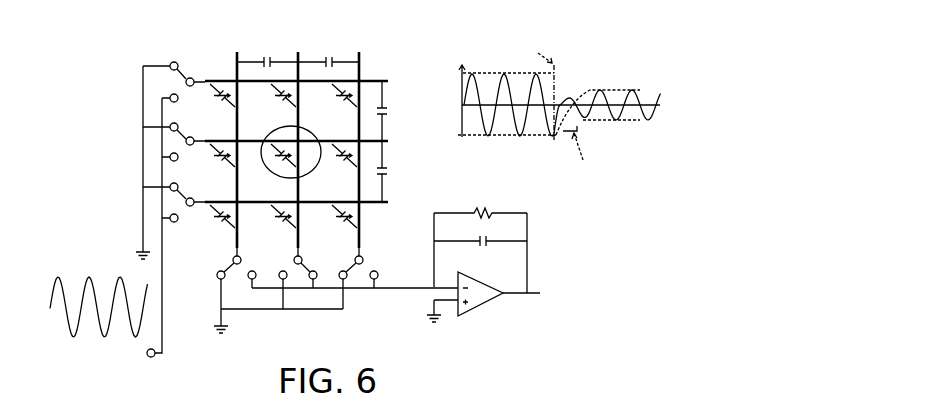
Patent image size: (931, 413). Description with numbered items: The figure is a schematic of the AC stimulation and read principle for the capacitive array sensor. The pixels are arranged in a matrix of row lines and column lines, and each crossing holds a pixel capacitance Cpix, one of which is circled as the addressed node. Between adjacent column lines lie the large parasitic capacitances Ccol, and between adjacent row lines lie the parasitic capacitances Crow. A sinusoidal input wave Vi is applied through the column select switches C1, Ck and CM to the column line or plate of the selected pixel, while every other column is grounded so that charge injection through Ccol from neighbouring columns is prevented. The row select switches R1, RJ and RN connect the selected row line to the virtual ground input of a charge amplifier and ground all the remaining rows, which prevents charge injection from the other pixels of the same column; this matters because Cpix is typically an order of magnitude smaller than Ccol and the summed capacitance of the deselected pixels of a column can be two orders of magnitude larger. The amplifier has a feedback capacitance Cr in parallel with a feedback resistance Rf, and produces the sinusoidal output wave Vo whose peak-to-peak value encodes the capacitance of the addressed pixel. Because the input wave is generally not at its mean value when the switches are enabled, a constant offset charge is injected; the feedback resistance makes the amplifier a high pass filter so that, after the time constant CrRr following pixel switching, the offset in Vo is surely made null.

The row select switch R1 is at (174, 75).
The row select switch RJ is at (174, 141).
The row select switch RN is at (174, 200).
The parasitic capacitance of neighboring columns Ccol is at (298, 50).
The parasitic capacitance of neighboring rows Crow is at (395, 141).
The pixel capacitance Cpix is at (298, 178).
The column select switch C1 is at (239, 278).
The column select switch Ck is at (302, 278).
The column select switch CM is at (364, 278).
The input sinusoidal wave Vi is at (99, 293).
The output wave of the charge amplifier Vo is at (493, 297).
The feedback resistance Rf is at (480, 245).
The feedback capacitance Cr is at (480, 237).
The feedback time constant CrRr is at (547, 111).